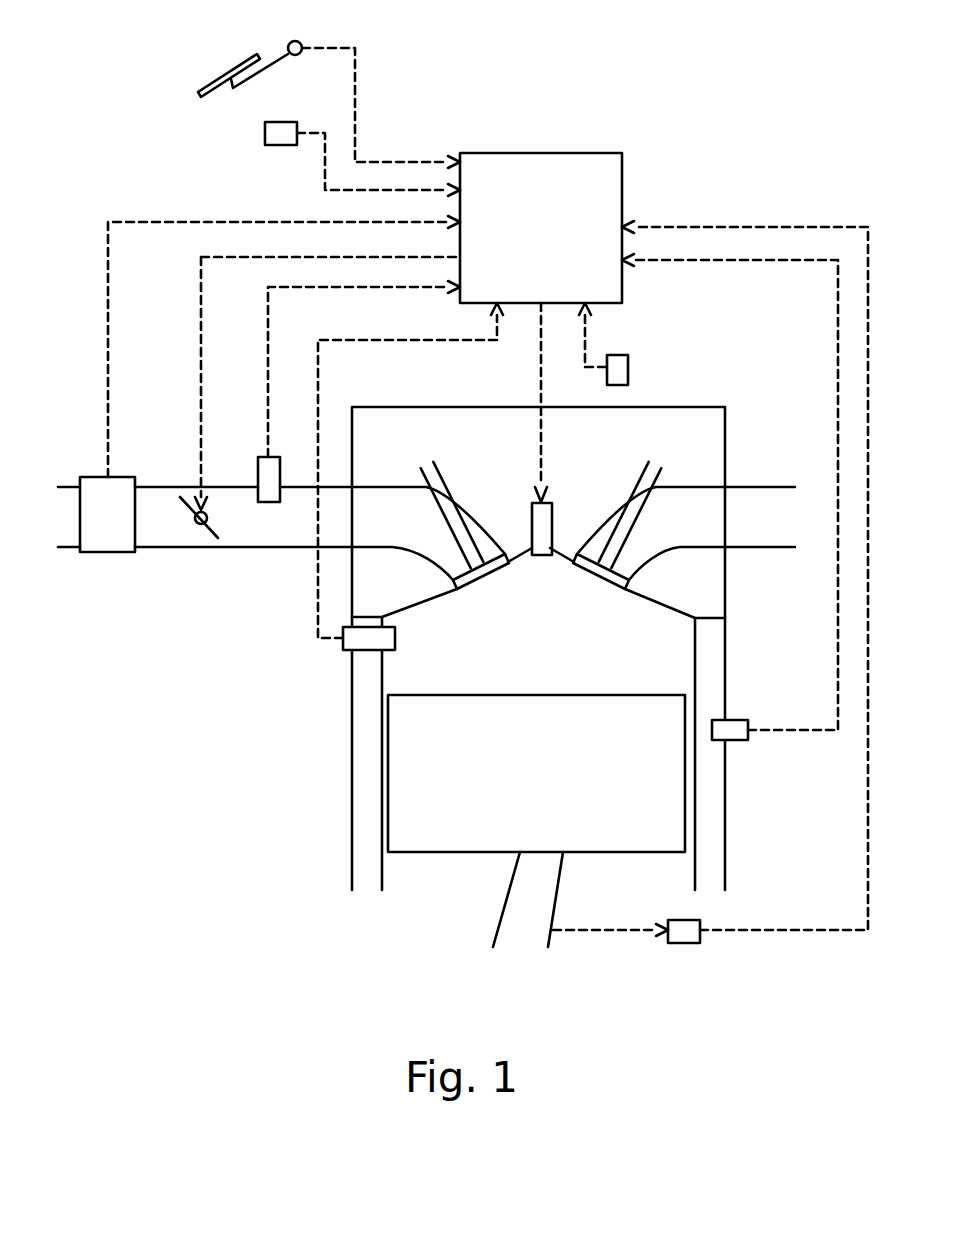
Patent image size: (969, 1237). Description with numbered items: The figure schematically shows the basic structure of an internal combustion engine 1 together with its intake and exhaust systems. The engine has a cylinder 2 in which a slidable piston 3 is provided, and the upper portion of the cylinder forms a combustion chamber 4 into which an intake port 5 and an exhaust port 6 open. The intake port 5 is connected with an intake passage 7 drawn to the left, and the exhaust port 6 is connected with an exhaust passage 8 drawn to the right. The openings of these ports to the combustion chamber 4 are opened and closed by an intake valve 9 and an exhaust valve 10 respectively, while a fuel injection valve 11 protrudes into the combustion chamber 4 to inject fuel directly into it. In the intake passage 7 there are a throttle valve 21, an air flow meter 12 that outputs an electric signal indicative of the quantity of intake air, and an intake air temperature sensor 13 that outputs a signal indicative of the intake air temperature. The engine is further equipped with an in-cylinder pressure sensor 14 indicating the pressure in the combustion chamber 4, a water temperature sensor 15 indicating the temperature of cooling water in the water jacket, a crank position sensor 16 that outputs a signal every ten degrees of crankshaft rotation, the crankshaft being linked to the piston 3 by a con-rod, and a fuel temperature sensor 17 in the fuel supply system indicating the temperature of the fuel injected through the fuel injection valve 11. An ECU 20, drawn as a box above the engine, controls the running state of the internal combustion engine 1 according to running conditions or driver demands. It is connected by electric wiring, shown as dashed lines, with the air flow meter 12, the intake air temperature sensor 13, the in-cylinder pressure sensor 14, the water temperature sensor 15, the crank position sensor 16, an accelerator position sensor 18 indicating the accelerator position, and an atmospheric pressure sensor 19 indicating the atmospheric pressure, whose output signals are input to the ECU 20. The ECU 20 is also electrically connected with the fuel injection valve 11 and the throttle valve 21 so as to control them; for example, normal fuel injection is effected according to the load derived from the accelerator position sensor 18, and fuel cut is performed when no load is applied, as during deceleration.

The internal combustion engine 1 is at (248, 778).
The cylinder 2 is at (713, 797).
The piston 3 is at (430, 767).
The combustion chamber 4 is at (503, 611).
The intake port 5 is at (385, 487).
The exhaust port 6 is at (679, 549).
The intake passage 7 is at (272, 548).
The exhaust passage 8 is at (742, 487).
The intake valve 9 is at (443, 477).
The exhaust valve 10 is at (637, 474).
The fuel injection valve 11 is at (556, 527).
The air flow meter 12 is at (108, 553).
The intake air temperature sensor 13 is at (257, 463).
The in-cylinder pressure sensor 14 is at (342, 642).
The water temperature sensor 15 is at (733, 741).
The crank position sensor 16 is at (683, 945).
The fuel temperature sensor 17 is at (628, 368).
The accelerator position sensor 18 is at (297, 41).
The atmospheric pressure sensor 19 is at (281, 146).
The ECU 20 is at (537, 153).
The throttle valve 21 is at (193, 523).